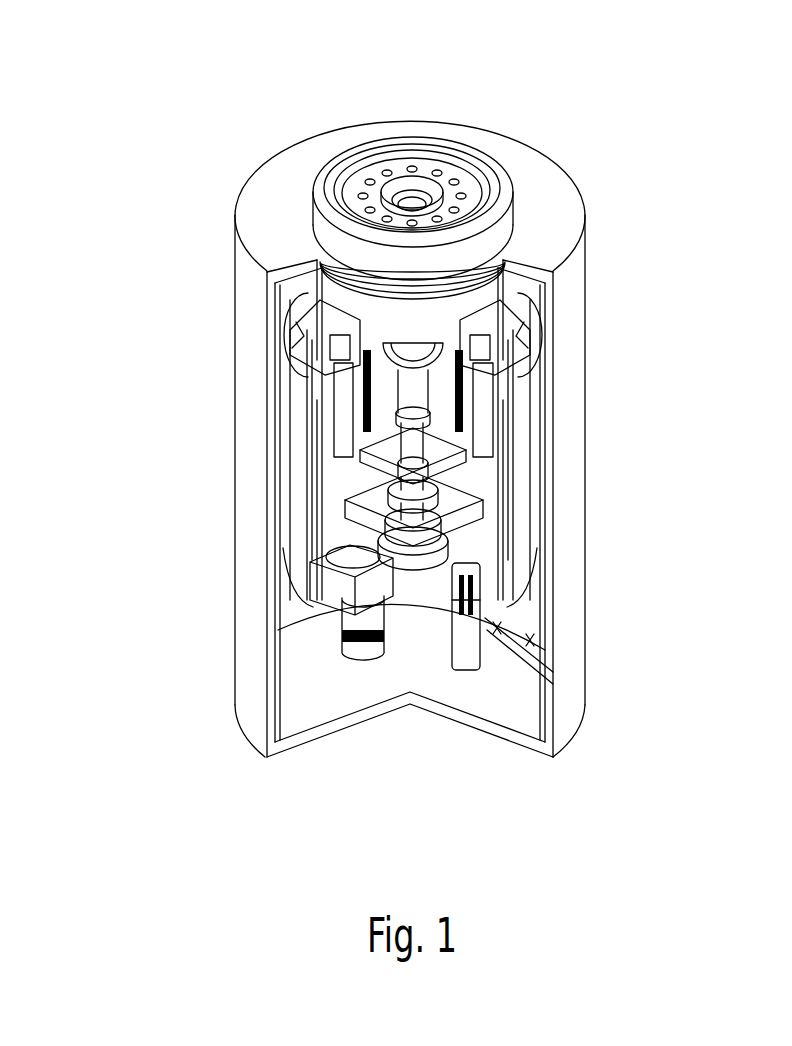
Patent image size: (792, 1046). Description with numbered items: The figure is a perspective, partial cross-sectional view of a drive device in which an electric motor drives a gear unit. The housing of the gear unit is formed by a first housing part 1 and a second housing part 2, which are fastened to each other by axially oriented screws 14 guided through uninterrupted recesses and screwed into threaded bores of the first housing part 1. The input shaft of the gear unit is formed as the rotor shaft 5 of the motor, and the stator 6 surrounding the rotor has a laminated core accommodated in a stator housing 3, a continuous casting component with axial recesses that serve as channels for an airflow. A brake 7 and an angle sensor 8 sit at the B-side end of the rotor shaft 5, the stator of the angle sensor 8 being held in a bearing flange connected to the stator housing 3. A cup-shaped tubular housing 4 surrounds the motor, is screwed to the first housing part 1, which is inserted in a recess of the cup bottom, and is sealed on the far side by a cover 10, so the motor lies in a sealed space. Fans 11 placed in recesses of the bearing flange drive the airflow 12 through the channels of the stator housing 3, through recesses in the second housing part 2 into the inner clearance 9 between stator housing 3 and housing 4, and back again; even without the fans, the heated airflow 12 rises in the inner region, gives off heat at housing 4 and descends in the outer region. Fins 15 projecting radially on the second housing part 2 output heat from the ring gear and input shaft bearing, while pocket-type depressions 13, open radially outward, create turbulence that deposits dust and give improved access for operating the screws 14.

The first housing part 1 is at (470, 312).
The second housing part 2 is at (460, 340).
The stator housing 3 is at (528, 383).
The housing 4 is at (572, 393).
The rotor shaft 5 is at (442, 407).
The stator 6 is at (470, 452).
The brake 7 is at (477, 487).
The angle sensor 8 is at (488, 566).
The inner clearance 9 is at (530, 642).
The cover 10 is at (493, 693).
The fans 11 is at (333, 578).
The airflow 12 is at (273, 498).
The pocket-type depression 13 is at (352, 342).
The screws 14 is at (342, 328).
The fins 15 is at (300, 331).